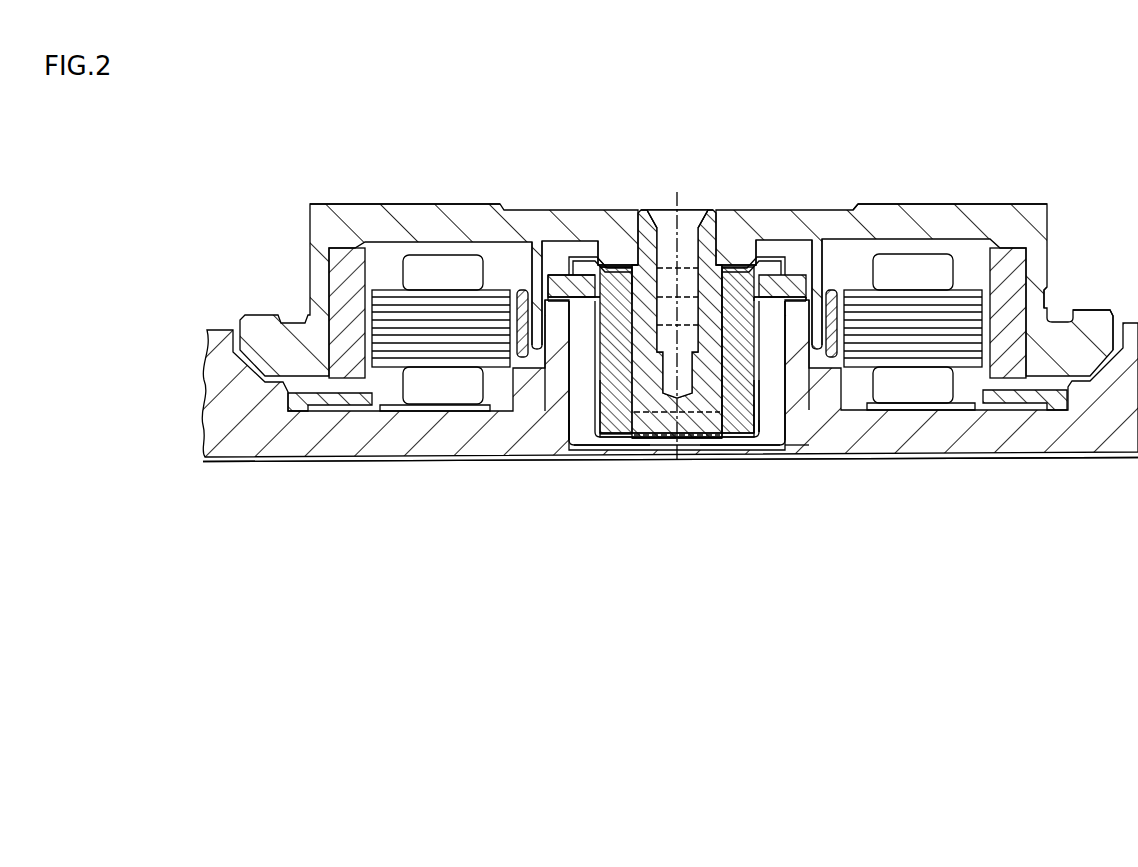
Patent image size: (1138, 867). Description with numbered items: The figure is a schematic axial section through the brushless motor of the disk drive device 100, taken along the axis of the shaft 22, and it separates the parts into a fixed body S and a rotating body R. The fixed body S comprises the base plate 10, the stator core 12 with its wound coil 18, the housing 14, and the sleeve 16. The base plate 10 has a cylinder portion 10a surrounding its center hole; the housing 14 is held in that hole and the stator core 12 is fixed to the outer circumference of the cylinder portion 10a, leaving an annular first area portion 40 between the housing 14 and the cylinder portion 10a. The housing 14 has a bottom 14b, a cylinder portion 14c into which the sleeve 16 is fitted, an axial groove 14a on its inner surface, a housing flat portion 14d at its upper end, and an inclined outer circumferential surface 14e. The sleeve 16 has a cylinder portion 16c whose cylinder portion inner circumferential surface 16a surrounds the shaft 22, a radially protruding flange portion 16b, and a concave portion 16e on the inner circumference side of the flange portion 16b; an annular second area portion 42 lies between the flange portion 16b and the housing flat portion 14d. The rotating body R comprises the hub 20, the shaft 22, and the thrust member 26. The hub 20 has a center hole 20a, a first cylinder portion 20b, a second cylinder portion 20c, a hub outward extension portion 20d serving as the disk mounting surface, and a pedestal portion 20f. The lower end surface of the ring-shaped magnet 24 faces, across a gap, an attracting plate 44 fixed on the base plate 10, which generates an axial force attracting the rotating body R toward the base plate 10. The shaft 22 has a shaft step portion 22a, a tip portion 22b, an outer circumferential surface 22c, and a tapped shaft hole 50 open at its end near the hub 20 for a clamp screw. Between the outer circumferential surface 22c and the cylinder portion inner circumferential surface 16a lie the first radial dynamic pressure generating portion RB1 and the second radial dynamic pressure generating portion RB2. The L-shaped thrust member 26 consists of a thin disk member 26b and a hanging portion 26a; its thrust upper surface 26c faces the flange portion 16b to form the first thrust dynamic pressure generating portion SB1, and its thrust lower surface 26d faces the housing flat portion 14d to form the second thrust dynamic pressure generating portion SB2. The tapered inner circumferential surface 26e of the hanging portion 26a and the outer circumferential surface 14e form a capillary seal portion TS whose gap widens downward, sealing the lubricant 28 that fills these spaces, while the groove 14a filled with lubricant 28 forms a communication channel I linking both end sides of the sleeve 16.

The base plate 10 is at (255, 440).
The cylinder portion 10a is at (558, 285).
The stator core 12 is at (390, 305).
The housing 14 is at (582, 392).
The groove 14a is at (772, 447).
The bottom 14b is at (776, 448).
The cylinder portion 14c is at (590, 447).
The housing flat portion 14d is at (788, 440).
The outer circumferential surface 14e is at (572, 440).
The sleeve 16 is at (599, 446).
The cylinder portion inner circumferential surface 16a is at (632, 446).
The flange portion 16b is at (594, 292).
The cylinder portion 16c is at (760, 432).
The concave portion 16e is at (772, 298).
The coil 18 is at (425, 398).
The hub 20 is at (780, 232).
The center hole 20a is at (728, 258).
The first cylinder portion 20b is at (820, 300).
The second cylinder portion 20c is at (1050, 292).
The hub outward extension portion 20d is at (1090, 320).
The pedestal portion 20f is at (1020, 216).
The shaft 22 is at (690, 442).
The shaft step portion 22a is at (724, 300).
The tip portion 22b is at (682, 442).
The outer circumferential surface 22c is at (650, 255).
The magnet 24 is at (1005, 252).
The thrust member 26 is at (772, 340).
The hanging portion 26a is at (598, 400).
The disk member 26b is at (568, 293).
The thrust upper surface 26c is at (590, 282).
The thrust lower surface 26d is at (757, 395).
The inner circumferential surface 26e is at (556, 300).
The lubricant 28 is at (845, 262).
The first area portion 40 is at (602, 438).
The second area portion 42 is at (622, 266).
The attracting plate 44 is at (362, 398).
The shaft hole 50 is at (664, 238).
The disk drive device 100 is at (678, 635).
The rotating body R is at (412, 228).
The fixed body S is at (310, 464).
The communication channel I is at (622, 442).
The capillary seal portion TS is at (800, 410).
The first radial dynamic pressure generating portion RB1 is at (752, 298).
The second radial dynamic pressure generating portion RB2 is at (745, 428).
The first thrust dynamic pressure generating portion SB1 is at (804, 302).
The second thrust dynamic pressure generating portion SB2 is at (568, 425).